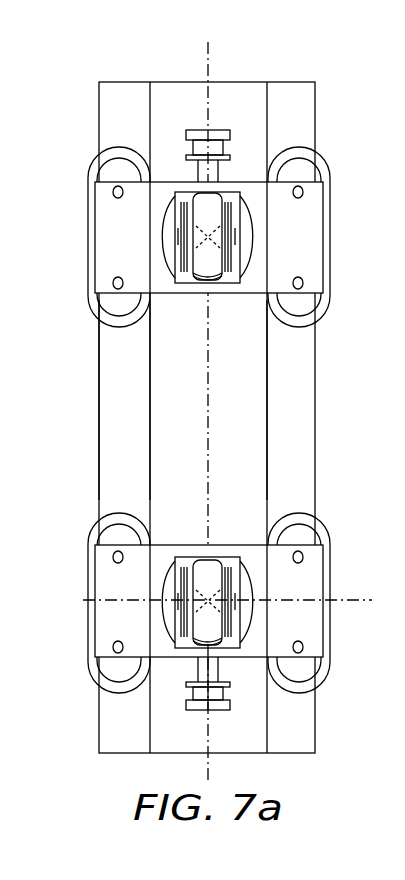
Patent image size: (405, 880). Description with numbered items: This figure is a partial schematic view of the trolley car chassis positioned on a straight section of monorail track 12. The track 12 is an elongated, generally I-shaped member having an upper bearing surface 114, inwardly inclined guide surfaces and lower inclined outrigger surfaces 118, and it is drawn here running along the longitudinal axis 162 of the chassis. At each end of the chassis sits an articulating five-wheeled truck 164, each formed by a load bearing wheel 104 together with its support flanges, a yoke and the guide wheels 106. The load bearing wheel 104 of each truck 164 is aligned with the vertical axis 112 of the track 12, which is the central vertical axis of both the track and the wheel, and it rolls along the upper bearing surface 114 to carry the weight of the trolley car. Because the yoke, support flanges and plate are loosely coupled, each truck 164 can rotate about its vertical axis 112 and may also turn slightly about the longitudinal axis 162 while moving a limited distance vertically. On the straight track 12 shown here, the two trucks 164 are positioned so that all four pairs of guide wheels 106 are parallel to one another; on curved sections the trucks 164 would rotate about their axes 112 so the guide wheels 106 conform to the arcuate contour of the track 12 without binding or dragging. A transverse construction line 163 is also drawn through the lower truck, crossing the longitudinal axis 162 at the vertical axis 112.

The monorail track 12 is at (315, 420).
The load bearing wheel 104 is at (213, 278).
The guide wheels 106 is at (323, 173).
The vertical axis 112 is at (213, 647).
The upper bearing surface 114 is at (193, 421).
The lower inclined outrigger surfaces 118 is at (105, 370).
The longitudinal axis 162 is at (210, 52).
The transverse axis 163 is at (353, 600).
The five-wheeled truck 164 is at (87, 154).